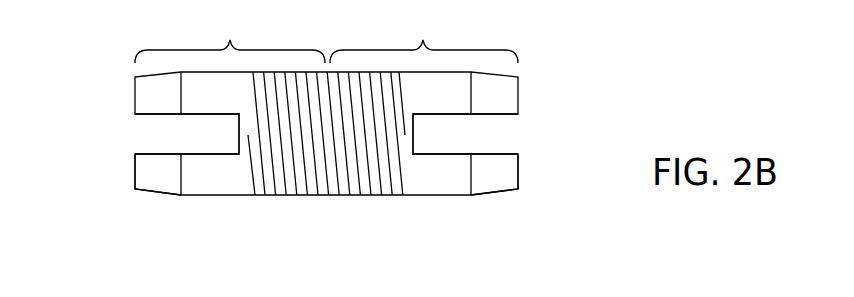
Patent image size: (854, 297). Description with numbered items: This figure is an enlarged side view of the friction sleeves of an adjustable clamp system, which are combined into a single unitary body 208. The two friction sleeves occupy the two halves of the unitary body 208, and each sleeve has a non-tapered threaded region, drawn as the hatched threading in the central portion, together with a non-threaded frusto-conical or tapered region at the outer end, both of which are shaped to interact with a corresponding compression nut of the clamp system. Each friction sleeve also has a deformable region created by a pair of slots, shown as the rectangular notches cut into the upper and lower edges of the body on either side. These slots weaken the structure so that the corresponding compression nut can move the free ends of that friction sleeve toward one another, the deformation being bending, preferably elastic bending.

The unitary body 208 is at (453, 199).